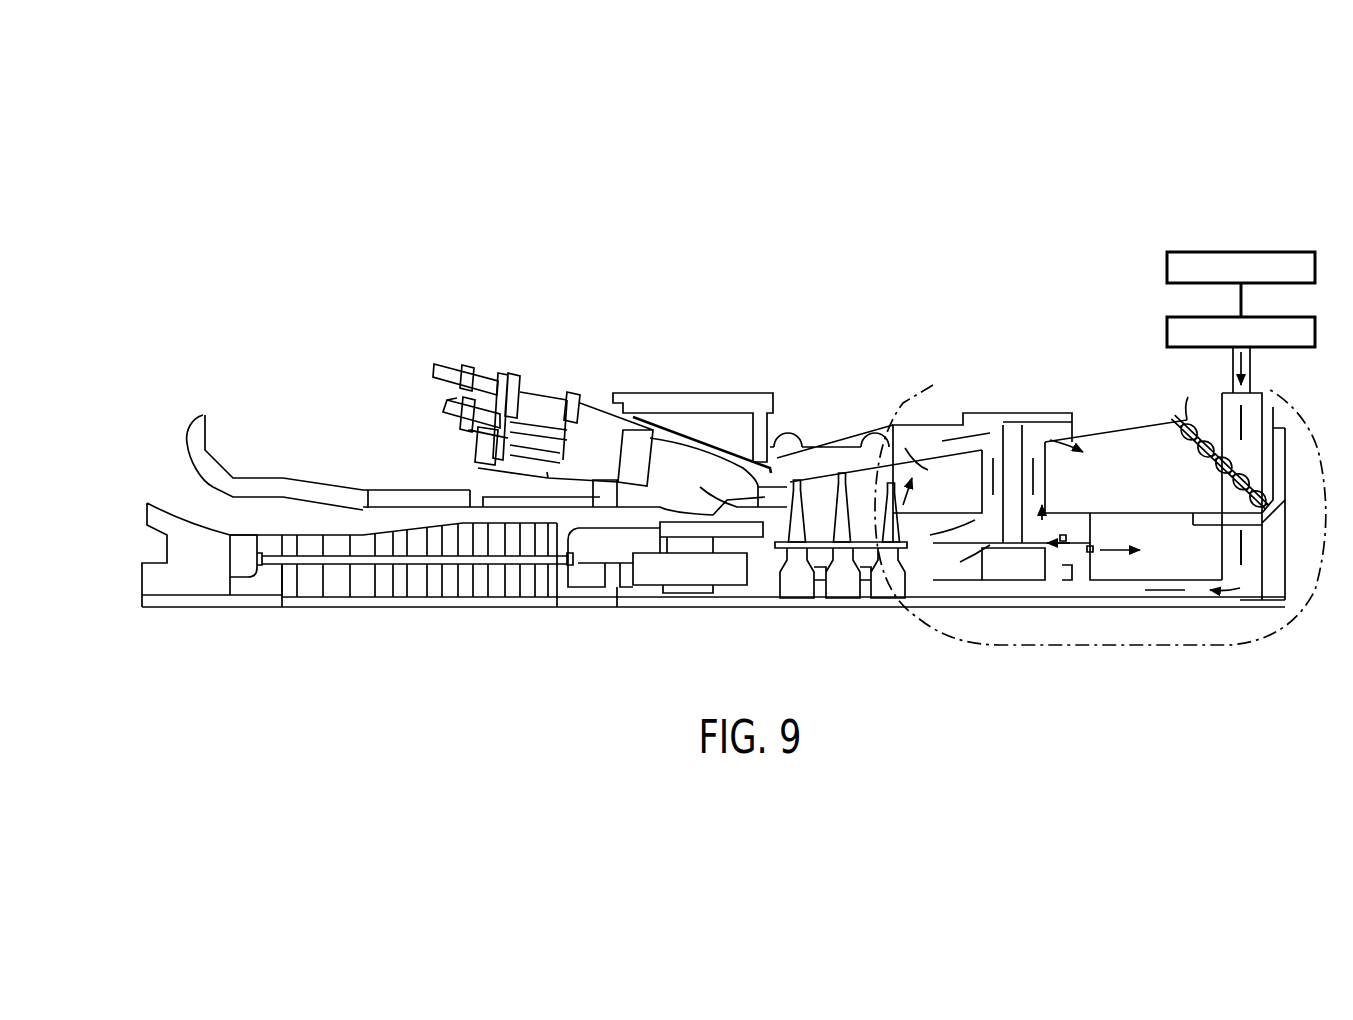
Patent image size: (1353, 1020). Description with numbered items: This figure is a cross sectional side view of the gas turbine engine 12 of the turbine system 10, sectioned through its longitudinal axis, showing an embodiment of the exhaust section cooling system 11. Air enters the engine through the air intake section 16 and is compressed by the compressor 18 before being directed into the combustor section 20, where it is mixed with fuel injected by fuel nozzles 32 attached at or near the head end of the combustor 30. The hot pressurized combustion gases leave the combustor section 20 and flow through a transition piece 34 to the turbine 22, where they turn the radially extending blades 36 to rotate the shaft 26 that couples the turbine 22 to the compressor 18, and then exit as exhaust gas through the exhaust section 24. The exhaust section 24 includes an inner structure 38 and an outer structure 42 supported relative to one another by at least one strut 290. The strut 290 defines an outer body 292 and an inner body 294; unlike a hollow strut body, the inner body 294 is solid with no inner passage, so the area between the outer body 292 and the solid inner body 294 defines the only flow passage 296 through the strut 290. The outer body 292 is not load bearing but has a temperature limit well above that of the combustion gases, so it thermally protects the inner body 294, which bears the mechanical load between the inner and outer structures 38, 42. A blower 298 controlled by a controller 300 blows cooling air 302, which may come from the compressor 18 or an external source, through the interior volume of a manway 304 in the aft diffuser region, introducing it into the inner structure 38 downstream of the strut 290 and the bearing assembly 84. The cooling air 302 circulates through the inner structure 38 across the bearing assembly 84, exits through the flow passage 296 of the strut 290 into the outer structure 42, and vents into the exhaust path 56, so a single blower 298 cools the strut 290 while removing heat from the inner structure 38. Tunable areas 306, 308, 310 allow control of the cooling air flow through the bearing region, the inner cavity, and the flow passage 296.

The turbine system 10 is at (905, 418).
The exhaust section cooling system 11 is at (1058, 247).
The gas turbine engine 12 is at (607, 632).
The air intake section 16 is at (201, 510).
The compressor 18 is at (517, 487).
The combustor section 20 is at (663, 305).
The turbine 22 is at (787, 641).
The exhaust section 24 is at (1275, 641).
The shaft 26 is at (867, 608).
The combustor 30 is at (413, 391).
The fuel nozzle 32 is at (538, 422).
The transition piece 34 is at (693, 420).
The blades 36 is at (887, 482).
The inner structure 38 is at (1162, 508).
The outer structure 42 is at (945, 420).
The exhaust path 56 is at (1120, 485).
The bearing assembly 84 is at (1021, 573).
The strut 290 is at (1050, 490).
The outer body 292 is at (1153, 466).
The inner body 294 is at (1005, 498).
The flow passage 296 is at (1053, 505).
The blower 298 is at (1167, 328).
The controller 300 is at (1167, 264).
The cooling air 302 is at (1233, 361).
The manway 304 is at (1247, 568).
The tunable area 306 is at (947, 528).
The tunable area 308 is at (1063, 538).
The tunable area 310 is at (1090, 549).